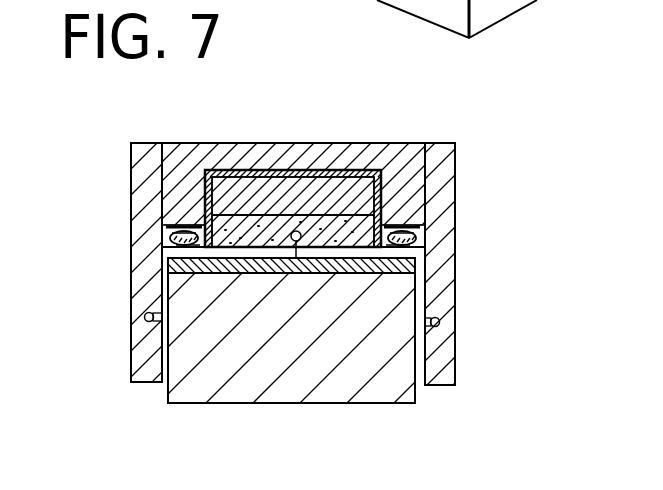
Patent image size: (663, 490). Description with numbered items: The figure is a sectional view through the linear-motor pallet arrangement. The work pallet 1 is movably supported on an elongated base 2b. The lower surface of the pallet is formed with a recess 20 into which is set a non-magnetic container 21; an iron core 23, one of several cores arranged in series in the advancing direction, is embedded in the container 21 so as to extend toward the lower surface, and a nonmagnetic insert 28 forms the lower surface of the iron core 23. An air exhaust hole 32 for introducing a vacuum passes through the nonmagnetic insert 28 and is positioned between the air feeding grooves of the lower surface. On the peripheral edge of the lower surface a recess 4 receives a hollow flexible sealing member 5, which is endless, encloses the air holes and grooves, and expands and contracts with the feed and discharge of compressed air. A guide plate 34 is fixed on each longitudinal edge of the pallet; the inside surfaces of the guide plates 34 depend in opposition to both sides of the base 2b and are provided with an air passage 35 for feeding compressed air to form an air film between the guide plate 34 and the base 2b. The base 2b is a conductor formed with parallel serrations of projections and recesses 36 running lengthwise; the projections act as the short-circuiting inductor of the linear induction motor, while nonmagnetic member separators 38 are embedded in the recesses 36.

The work pallet 1 is at (195, 137).
The elongated base 2b is at (388, 395).
The recess 4 is at (177, 222).
The hollow flexible sealing member 5 is at (172, 240).
The recess 20 is at (310, 188).
The non-magnetic container 21 is at (378, 176).
The iron core 23 is at (257, 170).
The nonmagnetic insert 28 is at (350, 215).
The air exhaust hole 32 is at (295, 262).
The guide plate 34 is at (149, 143).
The air passage 35 is at (144, 317).
The recess 36 is at (362, 263).
The nonmagnetic member separator 38 is at (253, 263).